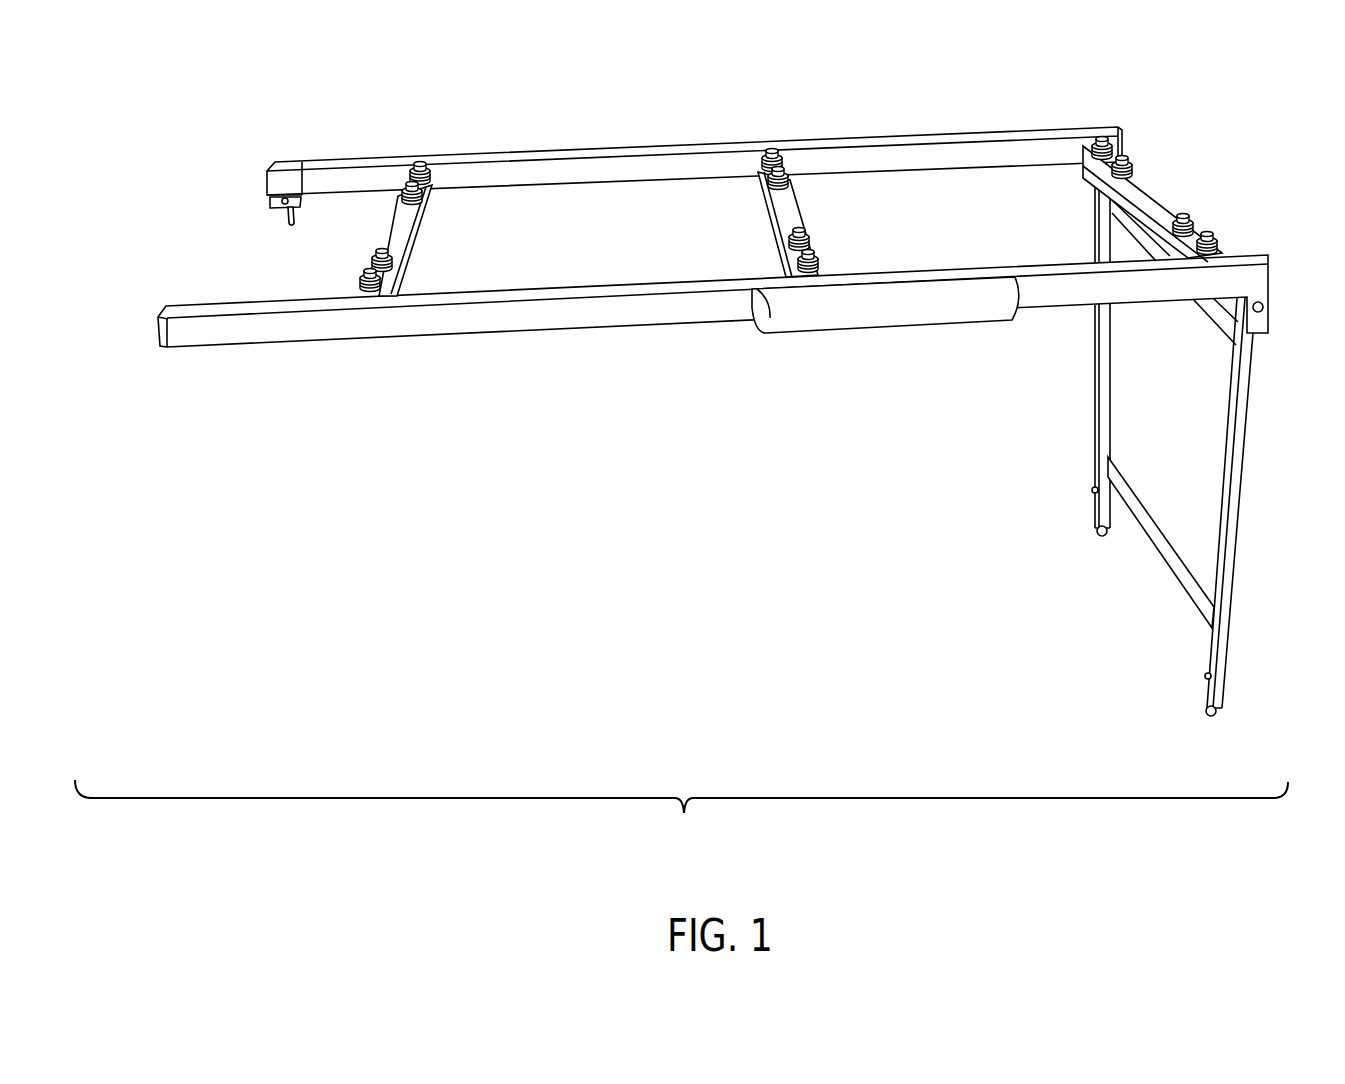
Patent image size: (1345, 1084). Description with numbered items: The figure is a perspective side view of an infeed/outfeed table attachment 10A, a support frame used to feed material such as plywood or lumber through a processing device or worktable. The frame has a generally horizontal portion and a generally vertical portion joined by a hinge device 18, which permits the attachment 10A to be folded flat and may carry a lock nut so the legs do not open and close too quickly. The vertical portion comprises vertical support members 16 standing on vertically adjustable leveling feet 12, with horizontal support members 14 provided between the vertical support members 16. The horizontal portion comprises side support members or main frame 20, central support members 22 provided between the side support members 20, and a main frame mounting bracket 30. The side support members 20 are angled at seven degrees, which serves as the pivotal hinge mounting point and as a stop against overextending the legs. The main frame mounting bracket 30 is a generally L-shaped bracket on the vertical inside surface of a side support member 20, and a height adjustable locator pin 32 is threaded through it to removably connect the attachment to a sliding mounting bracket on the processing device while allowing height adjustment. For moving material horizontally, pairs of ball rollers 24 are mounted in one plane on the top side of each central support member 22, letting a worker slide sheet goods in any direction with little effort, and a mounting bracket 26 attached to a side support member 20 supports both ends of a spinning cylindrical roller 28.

The infeed/outfeed table attachment 10A is at (681, 822).
The leveling feet 12 is at (1095, 528).
The horizontal support members 14 is at (1217, 318).
The vertical support members 16 is at (1093, 370).
The hinge device 18 is at (1270, 307).
The side support members 20 is at (368, 175).
The central support members 22 is at (397, 233).
The ball rollers 24 is at (417, 160).
The mounting bracket 26 is at (750, 307).
The cylindrical roller 28 is at (900, 313).
The main frame mounting bracket 30 is at (282, 187).
The height adjustable locator pin 32 is at (273, 217).